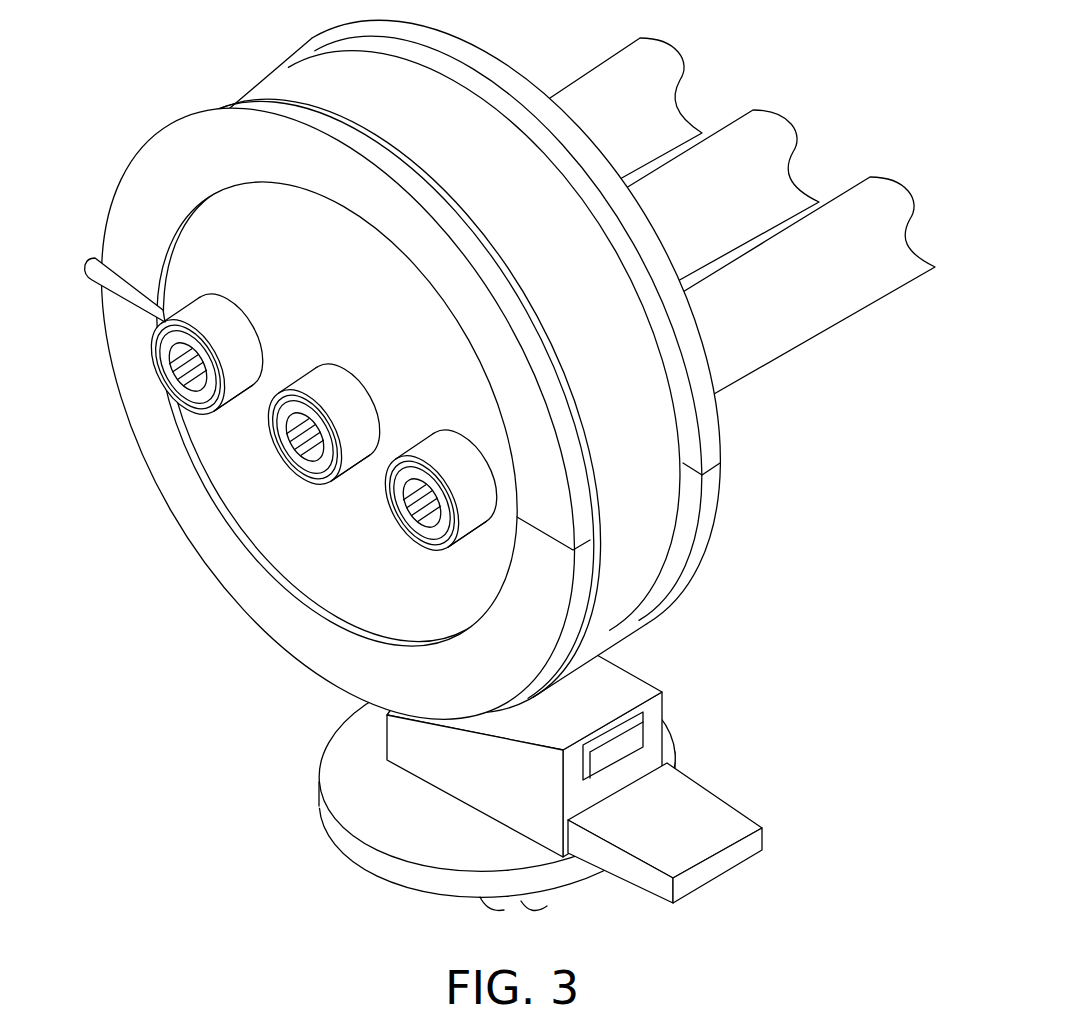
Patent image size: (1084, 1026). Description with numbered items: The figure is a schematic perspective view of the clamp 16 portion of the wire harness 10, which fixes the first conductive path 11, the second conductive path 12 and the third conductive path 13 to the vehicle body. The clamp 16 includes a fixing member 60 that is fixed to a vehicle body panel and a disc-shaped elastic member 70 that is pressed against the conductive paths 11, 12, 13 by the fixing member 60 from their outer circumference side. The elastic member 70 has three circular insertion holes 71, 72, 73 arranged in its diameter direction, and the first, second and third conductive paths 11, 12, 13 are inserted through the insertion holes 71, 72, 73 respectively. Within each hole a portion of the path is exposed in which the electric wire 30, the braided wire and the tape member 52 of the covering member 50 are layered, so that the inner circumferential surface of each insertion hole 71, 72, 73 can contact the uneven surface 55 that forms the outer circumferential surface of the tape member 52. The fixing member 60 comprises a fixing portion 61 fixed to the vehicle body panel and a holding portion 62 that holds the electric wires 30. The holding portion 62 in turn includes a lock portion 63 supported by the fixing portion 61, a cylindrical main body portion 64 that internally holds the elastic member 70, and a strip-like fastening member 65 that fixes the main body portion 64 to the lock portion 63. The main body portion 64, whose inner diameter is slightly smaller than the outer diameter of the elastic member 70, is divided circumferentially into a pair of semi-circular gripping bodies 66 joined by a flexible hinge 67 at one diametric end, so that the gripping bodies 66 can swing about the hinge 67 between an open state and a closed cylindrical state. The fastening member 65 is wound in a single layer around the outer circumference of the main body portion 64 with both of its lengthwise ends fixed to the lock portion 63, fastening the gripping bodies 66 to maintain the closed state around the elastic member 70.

The wire harness 10 is at (469, 455).
The first conductive path 11 is at (603, 64).
The second conductive path 12 is at (720, 131).
The third conductive path 13 is at (838, 199).
The clamp 16 is at (411, 455).
The electric wire 30 is at (163, 382).
The covering member 50 is at (315, 415).
The tape member 52 is at (341, 405).
The uneven surface 55 is at (238, 388).
The fixing member 60 is at (512, 772).
The fixing portion 61 is at (378, 849).
The holding portion 62 is at (640, 667).
The lock portion 63 is at (465, 780).
The main body portion 64 is at (167, 510).
The fastening member 65 is at (307, 80).
The gripping bodies 66 is at (713, 433).
The hinge 67 is at (102, 258).
The elastic member 70 is at (322, 583).
The insertion hole 71 is at (230, 316).
The insertion hole 72 is at (353, 383).
The insertion hole 73 is at (478, 467).